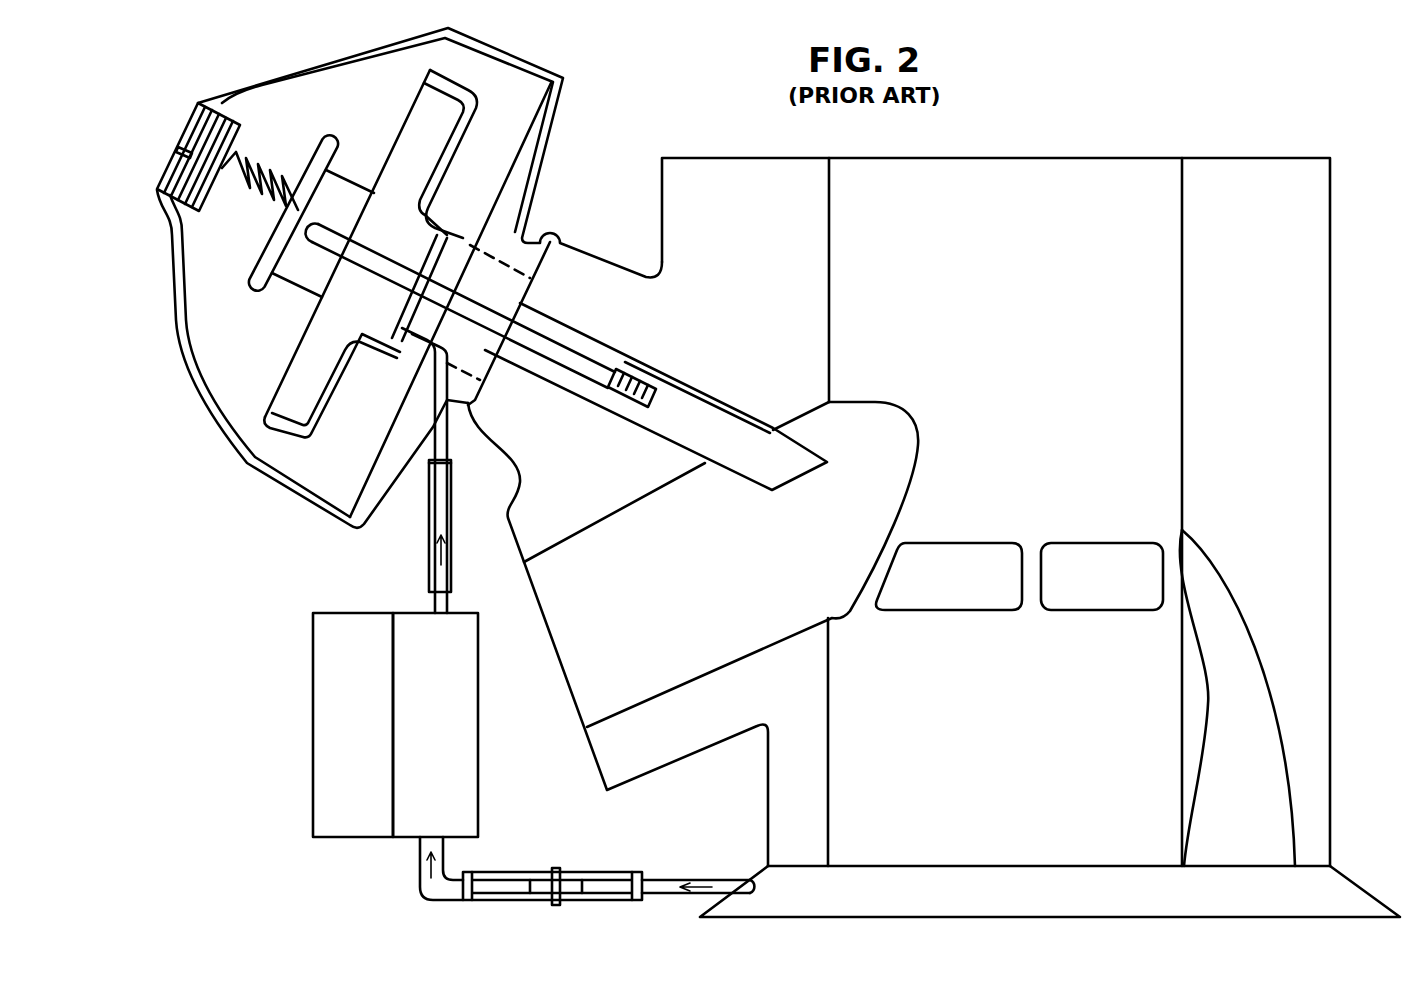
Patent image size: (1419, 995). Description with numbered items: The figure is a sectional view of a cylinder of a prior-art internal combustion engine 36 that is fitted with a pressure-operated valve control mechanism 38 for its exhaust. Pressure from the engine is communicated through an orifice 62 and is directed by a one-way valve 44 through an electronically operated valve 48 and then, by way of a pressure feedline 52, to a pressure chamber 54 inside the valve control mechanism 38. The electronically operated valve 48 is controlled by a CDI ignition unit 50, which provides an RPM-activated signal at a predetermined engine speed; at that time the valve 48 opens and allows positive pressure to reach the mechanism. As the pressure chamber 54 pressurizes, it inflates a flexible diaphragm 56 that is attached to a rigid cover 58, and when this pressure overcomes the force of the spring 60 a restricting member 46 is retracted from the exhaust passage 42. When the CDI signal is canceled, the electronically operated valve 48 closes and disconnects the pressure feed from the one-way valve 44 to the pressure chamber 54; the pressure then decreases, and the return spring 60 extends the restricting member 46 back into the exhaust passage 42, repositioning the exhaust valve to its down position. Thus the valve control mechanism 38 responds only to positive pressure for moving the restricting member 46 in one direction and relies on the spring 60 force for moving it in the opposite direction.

The internal combustion engine 36 is at (1230, 112).
The valve control mechanism 38 is at (160, 327).
The exhaust passage 42 is at (578, 680).
The one-way valve 44 is at (558, 872).
The restricting member 46 is at (716, 410).
The electronically operated valve 48 is at (480, 662).
The CDI ignition unit 50 is at (313, 633).
The pressure feedline 52 is at (428, 555).
The pressure chamber 54 is at (452, 115).
The flexible diaphragm 56 is at (305, 437).
The rigid cover 58 is at (285, 371).
The spring 60 is at (227, 177).
The orifice 62 is at (753, 882).